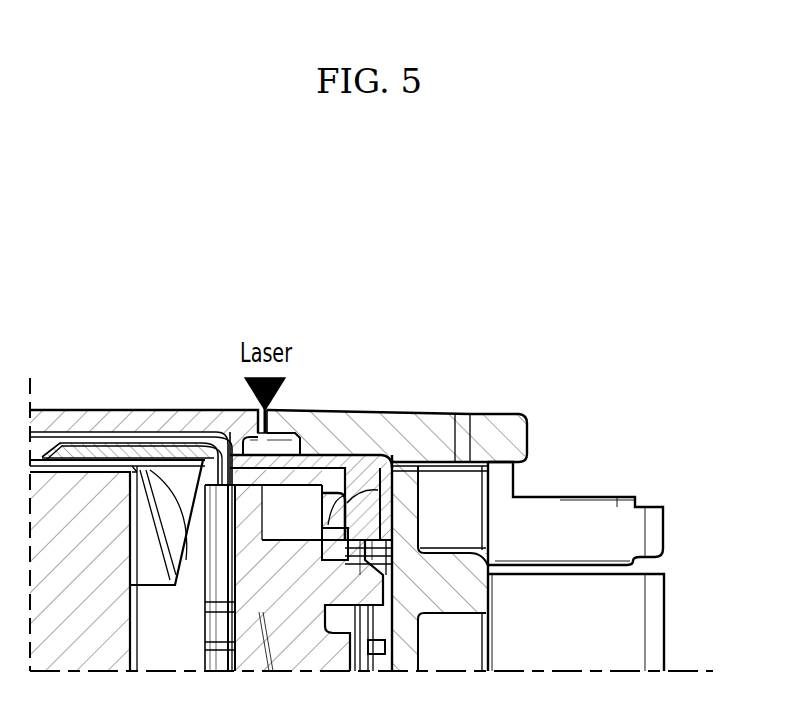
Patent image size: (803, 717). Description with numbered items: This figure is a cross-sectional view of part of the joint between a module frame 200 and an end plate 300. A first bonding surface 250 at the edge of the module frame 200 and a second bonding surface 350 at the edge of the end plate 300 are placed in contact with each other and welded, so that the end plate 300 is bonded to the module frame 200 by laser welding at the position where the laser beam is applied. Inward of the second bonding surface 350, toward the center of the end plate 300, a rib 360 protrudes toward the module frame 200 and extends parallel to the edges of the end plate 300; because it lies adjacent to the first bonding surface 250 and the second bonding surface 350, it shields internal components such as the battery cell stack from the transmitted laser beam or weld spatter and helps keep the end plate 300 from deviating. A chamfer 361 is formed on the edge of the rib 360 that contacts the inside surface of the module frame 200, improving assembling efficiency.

The module frame 200 is at (95, 420).
The first bonding surface 250 is at (255, 425).
The end plate 300 is at (428, 428).
The second bonding surface 350 is at (287, 425).
The rib 360 is at (257, 443).
The chamfer 361 is at (240, 431).